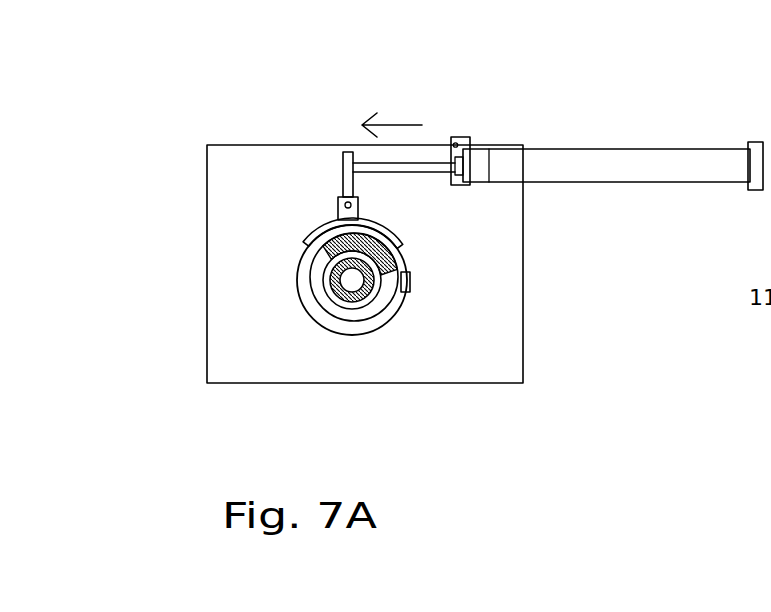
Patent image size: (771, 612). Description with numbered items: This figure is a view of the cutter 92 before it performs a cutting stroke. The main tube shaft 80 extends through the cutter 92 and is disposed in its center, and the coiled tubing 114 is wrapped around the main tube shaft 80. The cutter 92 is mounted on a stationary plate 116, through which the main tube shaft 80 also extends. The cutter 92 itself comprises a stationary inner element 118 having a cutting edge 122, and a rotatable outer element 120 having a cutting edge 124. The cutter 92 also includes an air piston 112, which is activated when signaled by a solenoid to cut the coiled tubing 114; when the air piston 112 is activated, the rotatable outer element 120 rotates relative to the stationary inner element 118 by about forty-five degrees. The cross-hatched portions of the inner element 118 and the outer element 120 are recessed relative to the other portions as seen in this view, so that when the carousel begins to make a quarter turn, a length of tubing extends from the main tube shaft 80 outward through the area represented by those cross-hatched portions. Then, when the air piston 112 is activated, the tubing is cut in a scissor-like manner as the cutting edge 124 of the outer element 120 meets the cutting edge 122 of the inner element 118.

The main tube shaft 80 is at (347, 283).
The cutter 92 is at (294, 209).
The air piston 112 is at (558, 158).
The coiled tubing 114 is at (345, 303).
The stationary plate 116 is at (233, 267).
The stationary inner element 118 is at (383, 302).
The rotatable outer element 120 is at (403, 288).
The cutting edge 122 is at (315, 233).
The cutting edge 124 is at (403, 274).